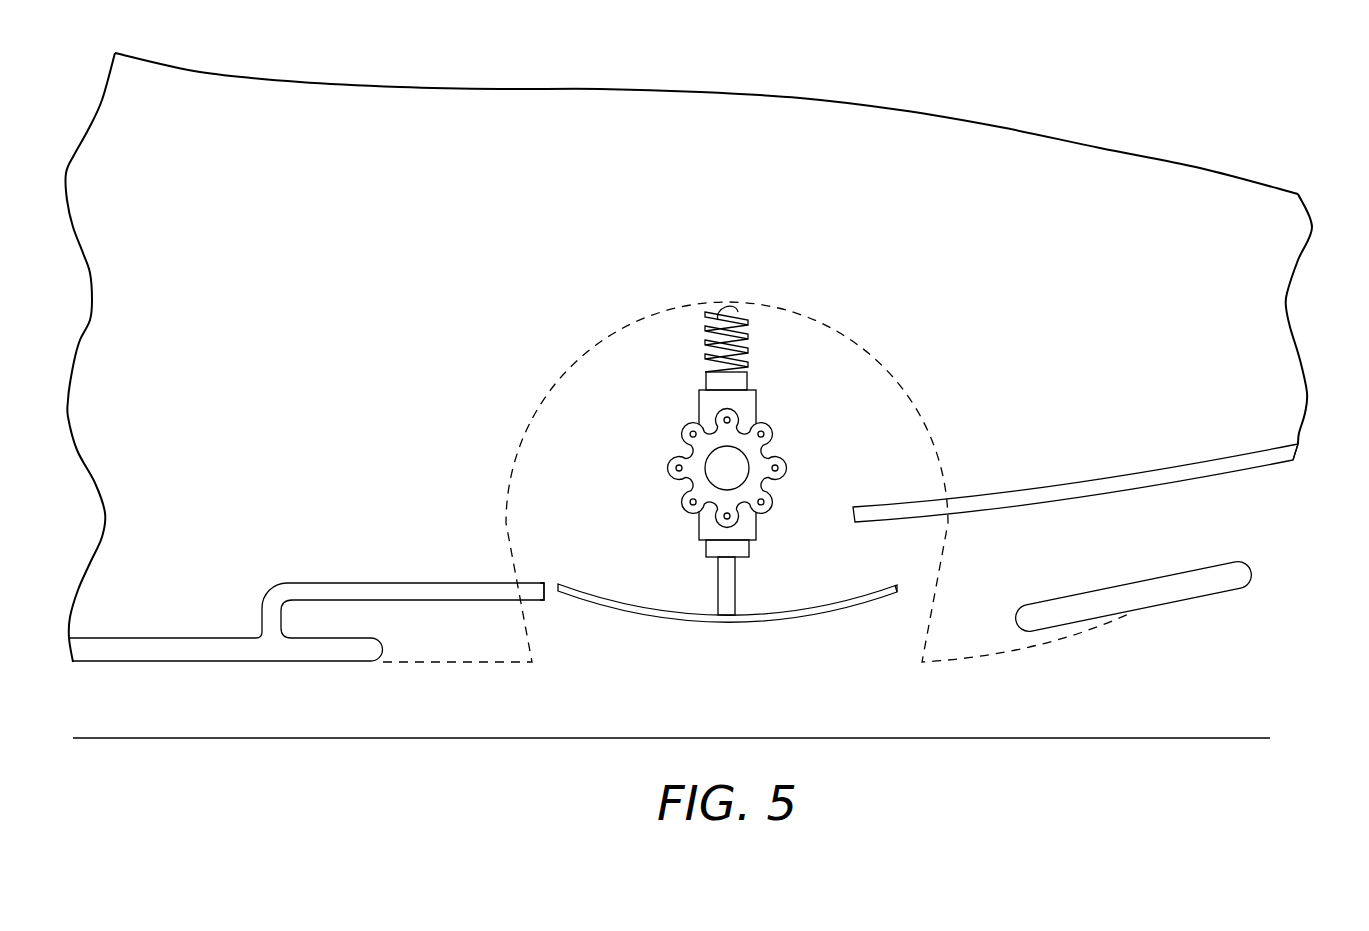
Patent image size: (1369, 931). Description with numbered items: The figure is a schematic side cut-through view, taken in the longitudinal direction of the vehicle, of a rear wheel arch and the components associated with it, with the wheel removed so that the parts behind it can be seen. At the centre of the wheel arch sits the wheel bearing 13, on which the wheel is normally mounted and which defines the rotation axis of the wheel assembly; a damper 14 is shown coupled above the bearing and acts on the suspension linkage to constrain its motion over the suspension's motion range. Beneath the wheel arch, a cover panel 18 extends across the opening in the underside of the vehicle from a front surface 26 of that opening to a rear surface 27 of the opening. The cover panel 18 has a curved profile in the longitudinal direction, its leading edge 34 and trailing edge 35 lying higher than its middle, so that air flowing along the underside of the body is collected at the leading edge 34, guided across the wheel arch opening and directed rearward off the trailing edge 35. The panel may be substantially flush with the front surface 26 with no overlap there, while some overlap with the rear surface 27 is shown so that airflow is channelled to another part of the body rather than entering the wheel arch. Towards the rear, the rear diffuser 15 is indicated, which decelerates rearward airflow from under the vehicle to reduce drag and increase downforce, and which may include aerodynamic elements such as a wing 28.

The wheel bearing 13 is at (692, 455).
The damper 14 is at (726, 312).
The rear diffuser 15 is at (1265, 512).
The cover panel 18 is at (727, 623).
The front surface of the opening 26 is at (546, 597).
The rear surface of the opening 27 is at (905, 537).
The wing 28 is at (1193, 598).
The leading edge 34 is at (558, 583).
The trailing edge 35 is at (900, 588).